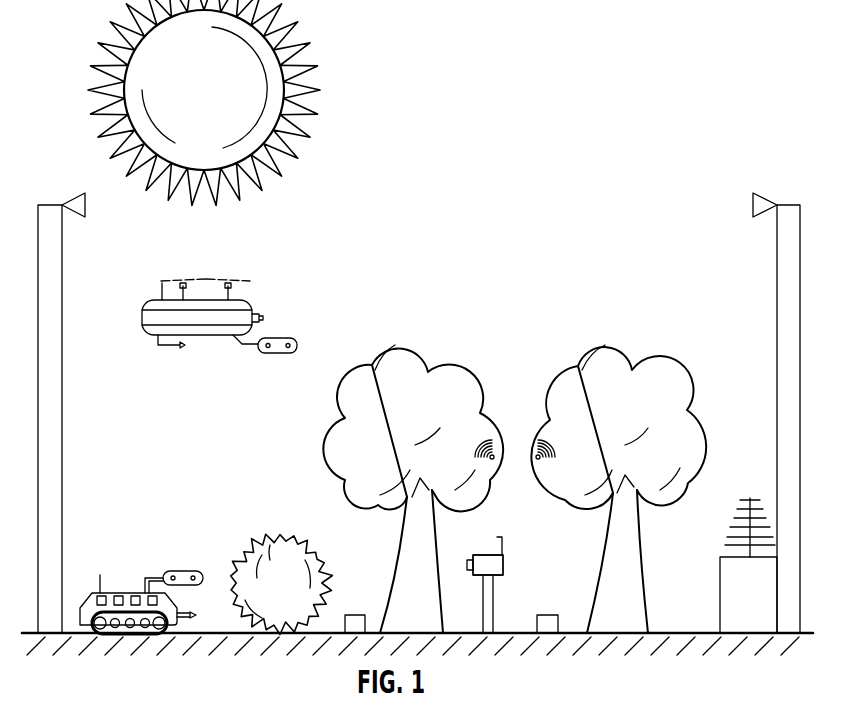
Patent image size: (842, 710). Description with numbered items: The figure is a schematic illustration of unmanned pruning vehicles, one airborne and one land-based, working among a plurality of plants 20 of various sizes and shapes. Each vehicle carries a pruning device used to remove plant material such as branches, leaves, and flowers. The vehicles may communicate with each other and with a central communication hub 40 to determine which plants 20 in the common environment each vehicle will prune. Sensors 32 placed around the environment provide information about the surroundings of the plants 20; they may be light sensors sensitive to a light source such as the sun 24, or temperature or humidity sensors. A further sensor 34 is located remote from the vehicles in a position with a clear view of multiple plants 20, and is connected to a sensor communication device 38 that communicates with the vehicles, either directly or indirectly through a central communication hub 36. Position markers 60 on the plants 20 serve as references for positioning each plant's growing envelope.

The plant 20 is at (433, 349).
The sun 24 is at (328, 99).
The sensor 32 is at (86, 205).
The sensor 34 is at (504, 565).
The central communication hub 36 is at (473, 560).
The sensor communication device 38 is at (504, 538).
The central communication hub 40 is at (750, 495).
The position marker 60 is at (537, 460).